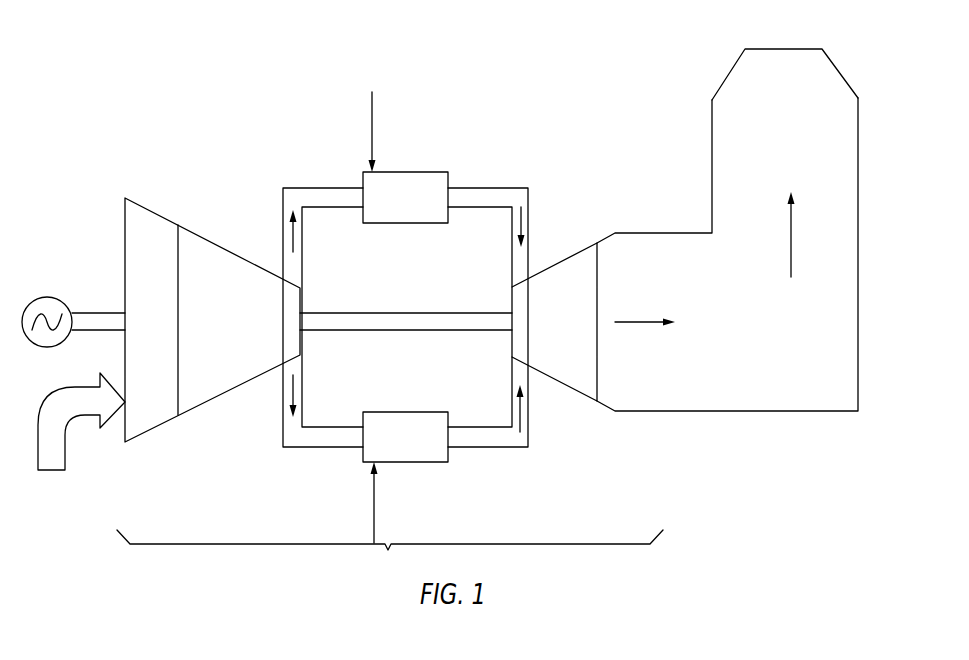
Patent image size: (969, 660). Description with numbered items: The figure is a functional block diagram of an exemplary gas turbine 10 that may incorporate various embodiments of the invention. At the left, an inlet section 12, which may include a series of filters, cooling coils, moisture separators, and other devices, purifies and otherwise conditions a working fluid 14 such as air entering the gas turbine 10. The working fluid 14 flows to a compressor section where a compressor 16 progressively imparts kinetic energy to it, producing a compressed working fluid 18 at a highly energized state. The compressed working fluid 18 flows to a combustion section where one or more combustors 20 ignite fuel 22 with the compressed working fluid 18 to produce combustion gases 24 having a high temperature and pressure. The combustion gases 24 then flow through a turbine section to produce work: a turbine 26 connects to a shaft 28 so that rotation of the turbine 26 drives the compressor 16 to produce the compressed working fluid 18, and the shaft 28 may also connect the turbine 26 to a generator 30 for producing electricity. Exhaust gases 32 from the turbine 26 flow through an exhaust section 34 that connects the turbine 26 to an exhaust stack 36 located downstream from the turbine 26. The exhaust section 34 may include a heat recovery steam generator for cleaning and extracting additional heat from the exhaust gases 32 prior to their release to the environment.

The gas turbine 10 is at (390, 555).
The inlet section 12 is at (146, 332).
The working fluid 14 is at (50, 471).
The compressor 16 is at (225, 324).
The compressed working fluid 18 is at (285, 238).
The combustor 20 is at (393, 210).
The fuel 22 is at (369, 110).
The combustion gases 24 is at (523, 220).
The turbine 26 is at (537, 320).
The shaft 28 is at (403, 332).
The generator 30 is at (48, 297).
The exhaust gases 32 is at (635, 323).
The exhaust section 34 is at (731, 342).
The exhaust stack 36 is at (843, 80).